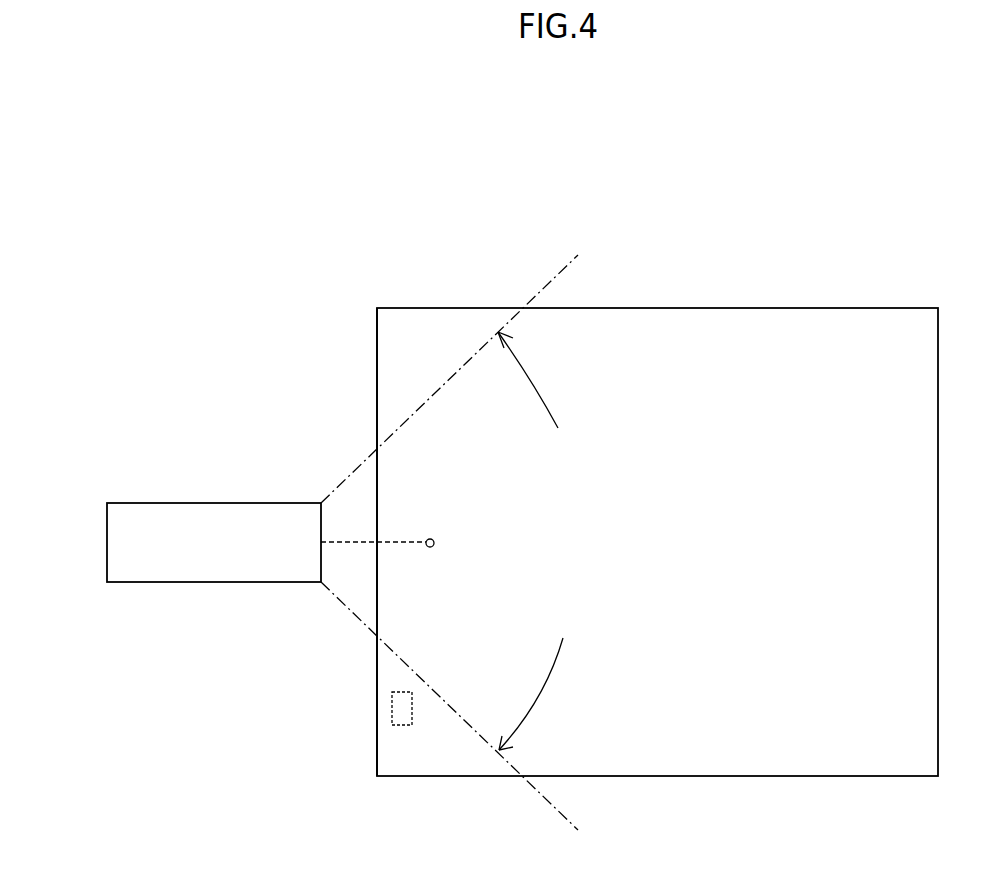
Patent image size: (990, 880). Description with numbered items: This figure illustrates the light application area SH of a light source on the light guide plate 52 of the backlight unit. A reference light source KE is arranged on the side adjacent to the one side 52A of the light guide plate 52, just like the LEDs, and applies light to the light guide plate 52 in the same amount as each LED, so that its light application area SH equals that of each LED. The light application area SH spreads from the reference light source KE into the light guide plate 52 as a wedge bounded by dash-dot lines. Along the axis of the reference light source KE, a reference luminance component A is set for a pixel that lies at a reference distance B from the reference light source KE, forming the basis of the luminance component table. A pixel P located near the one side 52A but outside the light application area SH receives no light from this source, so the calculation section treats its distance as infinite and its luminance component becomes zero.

The light guide plate 52 is at (744, 308).
The one side of the light guide plate 52A is at (377, 754).
The light application area SH is at (559, 542).
The reference light source KE is at (214, 542).
The reference luminance component A is at (444, 546).
The reference distance B is at (427, 545).
The pixel P is at (392, 717).